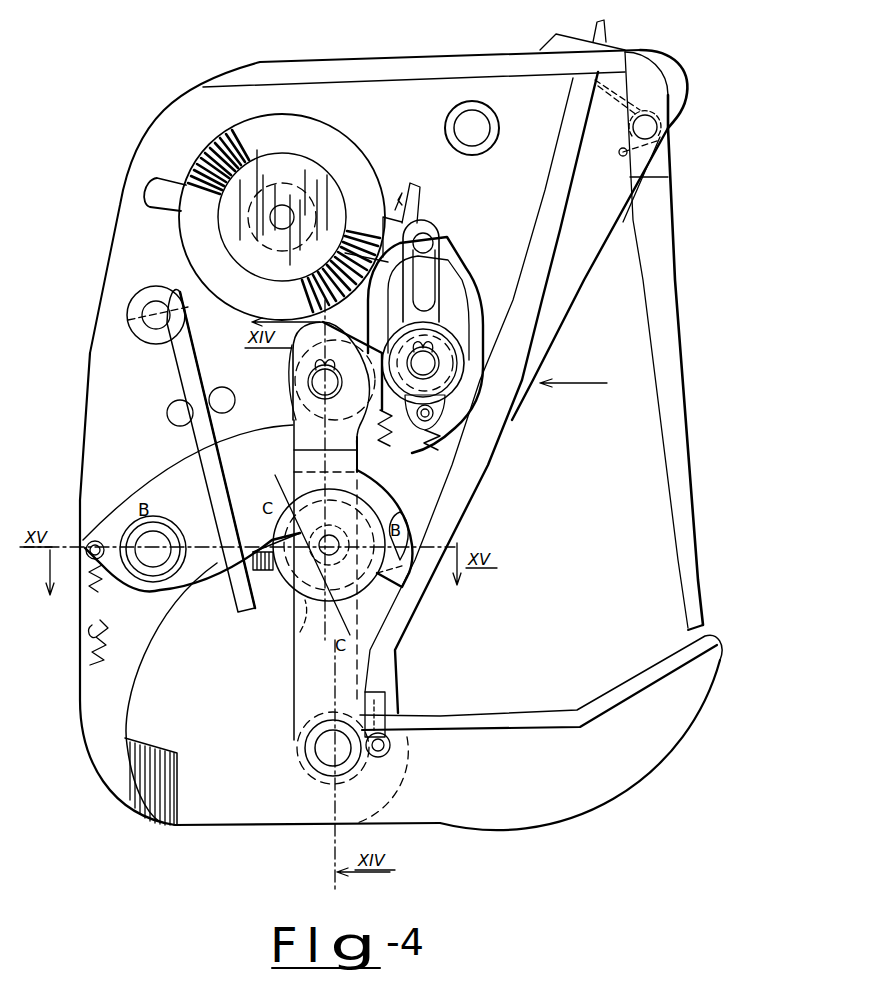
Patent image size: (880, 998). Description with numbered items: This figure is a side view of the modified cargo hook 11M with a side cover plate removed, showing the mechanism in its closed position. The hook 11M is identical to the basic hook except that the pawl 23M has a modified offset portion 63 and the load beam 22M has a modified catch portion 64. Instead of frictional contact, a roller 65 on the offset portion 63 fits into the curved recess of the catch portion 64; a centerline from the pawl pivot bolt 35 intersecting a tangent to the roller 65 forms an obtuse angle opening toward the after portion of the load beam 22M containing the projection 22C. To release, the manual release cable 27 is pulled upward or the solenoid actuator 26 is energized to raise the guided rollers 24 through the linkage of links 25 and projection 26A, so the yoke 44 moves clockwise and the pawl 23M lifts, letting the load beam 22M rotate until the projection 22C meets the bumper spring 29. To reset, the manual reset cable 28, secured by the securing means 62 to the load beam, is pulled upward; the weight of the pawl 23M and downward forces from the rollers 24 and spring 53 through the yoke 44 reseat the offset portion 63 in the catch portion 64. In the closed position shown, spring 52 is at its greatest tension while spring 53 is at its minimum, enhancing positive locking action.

The hook 11M is at (534, 373).
The projection 22C is at (180, 780).
The load beam 22M is at (520, 785).
The pawl 23M is at (278, 491).
The guided rollers 24 is at (460, 335).
The links 25 is at (440, 275).
The solenoid actuator 26 is at (288, 146).
The projection 26A is at (402, 192).
The manual release cable 27 is at (423, 203).
The manual reset cable 28 is at (607, 30).
The bumper spring 29 is at (200, 448).
The pawl pivot bolt 35 is at (158, 568).
The yoke 44 is at (327, 680).
The spring 52 is at (381, 440).
The spring 53 is at (438, 450).
The securing means 62 is at (377, 767).
The offset portion 63 is at (407, 585).
The catch portion 64 is at (300, 632).
The roller 65 is at (297, 587).